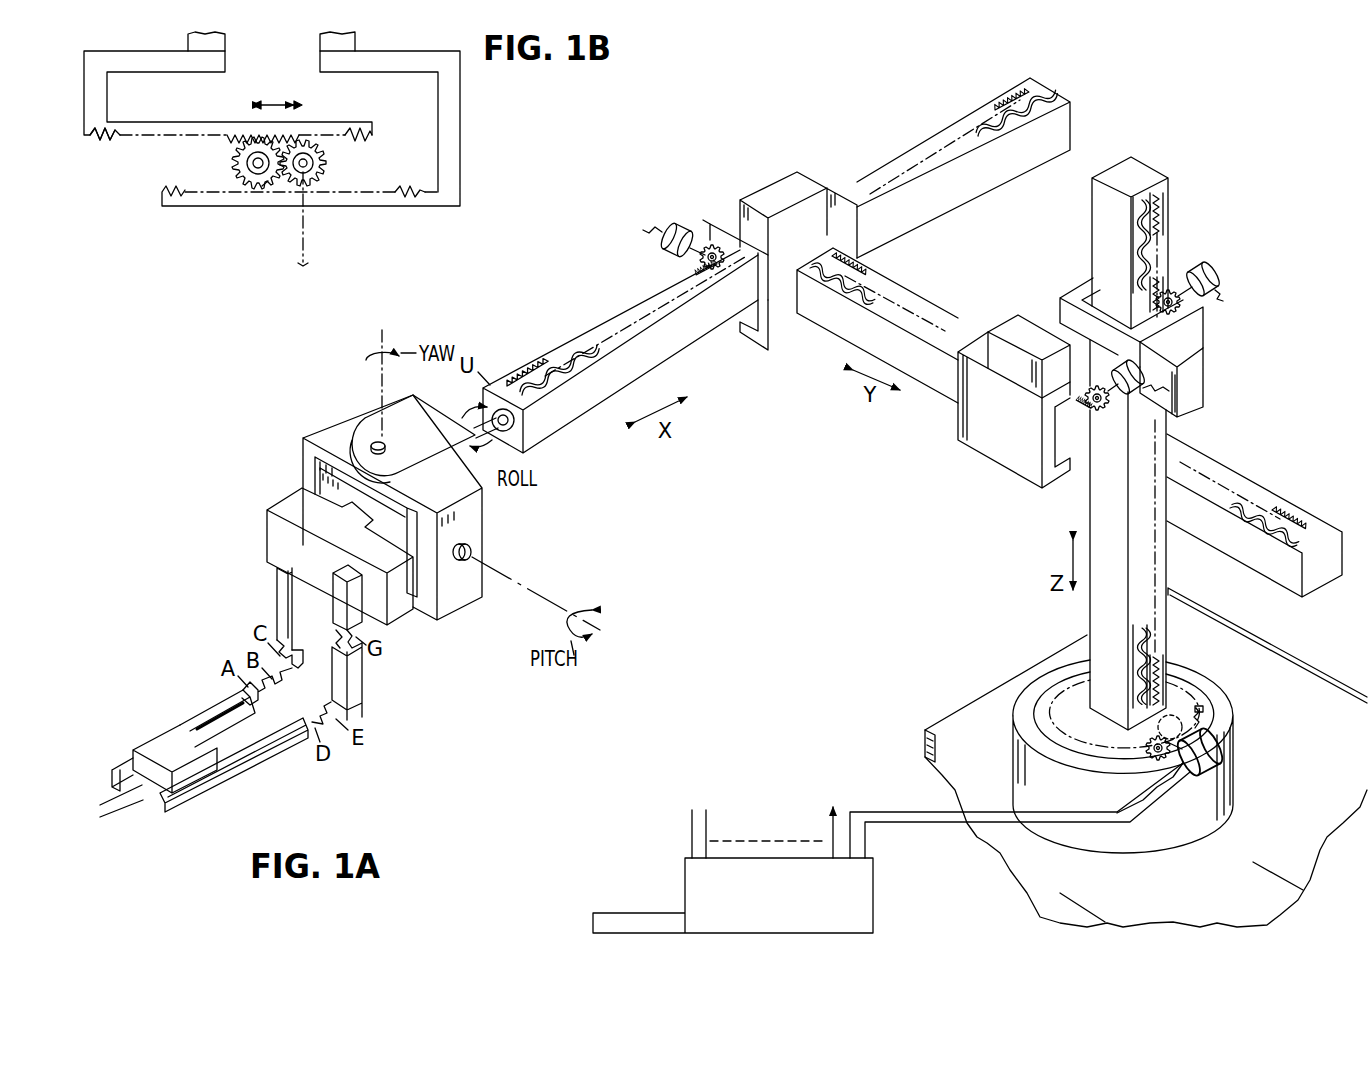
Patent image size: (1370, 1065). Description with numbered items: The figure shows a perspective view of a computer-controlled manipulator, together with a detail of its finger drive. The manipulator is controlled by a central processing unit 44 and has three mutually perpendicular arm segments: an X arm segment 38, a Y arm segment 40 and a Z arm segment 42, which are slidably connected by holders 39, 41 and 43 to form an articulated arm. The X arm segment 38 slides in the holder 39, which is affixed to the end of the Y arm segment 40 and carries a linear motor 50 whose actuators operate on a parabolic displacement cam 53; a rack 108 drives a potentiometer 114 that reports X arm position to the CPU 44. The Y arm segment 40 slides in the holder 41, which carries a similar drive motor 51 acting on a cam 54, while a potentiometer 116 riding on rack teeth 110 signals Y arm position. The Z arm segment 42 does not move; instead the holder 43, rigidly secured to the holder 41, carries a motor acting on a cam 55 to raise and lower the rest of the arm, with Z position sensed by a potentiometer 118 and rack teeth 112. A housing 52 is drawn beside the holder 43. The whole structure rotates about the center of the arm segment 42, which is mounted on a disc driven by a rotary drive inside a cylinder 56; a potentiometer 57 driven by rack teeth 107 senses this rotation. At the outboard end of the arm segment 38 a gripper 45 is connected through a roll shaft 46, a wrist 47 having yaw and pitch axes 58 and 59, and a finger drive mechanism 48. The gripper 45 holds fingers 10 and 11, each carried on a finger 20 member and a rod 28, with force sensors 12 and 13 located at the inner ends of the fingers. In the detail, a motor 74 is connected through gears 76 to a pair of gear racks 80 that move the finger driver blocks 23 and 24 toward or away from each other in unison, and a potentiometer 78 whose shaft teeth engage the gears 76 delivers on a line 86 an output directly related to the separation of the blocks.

In FIG. 1A, the finger 10 is at (212, 706).
In FIG. 1A, the finger 11 is at (268, 760).
In FIG. 1A, the sensor 12 is at (206, 641).
In FIG. 1A, the sensor 13 is at (270, 773).
In FIG. 1A, the second finger 20 is at (358, 681).
In FIG. 1B, the finger driver block 23 is at (328, 37).
In FIG. 1A, the finger driver block 23 is at (280, 602).
In FIG. 1B, the finger driver block 24 is at (218, 38).
In FIG. 1A, the finger driver block 24 is at (355, 607).
In FIG. 1A, the actuator rod 28 is at (122, 802).
In FIG. 1A, the X arm segment 38 is at (643, 306).
In FIG. 1A, the holder 39 is at (782, 341).
In FIG. 1A, the Y arm segment 40 is at (925, 300).
In FIG. 1A, the holder 41 is at (973, 427).
In FIG. 1A, the Z arm segment 42 is at (1167, 250).
In FIG. 1A, the holder 43 is at (1077, 292).
In FIG. 1A, the central processing unit (CPU) 44 is at (873, 882).
In FIG. 1A, the gripper 45 is at (357, 763).
In FIG. 1A, the roll shaft 46 is at (480, 420).
In FIG. 1A, the wrist 47 is at (343, 425).
In FIG. 1B, the finger drive mechanism 48 is at (493, 149).
In FIG. 1A, the finger drive mechanism 48 is at (293, 507).
In FIG. 1A, the linear motor 50 is at (800, 178).
In FIG. 1A, the drive motor 51 is at (998, 370).
In FIG. 1A, the Z drive housing 52 is at (1203, 357).
In FIG. 1A, the parabolic displacement cam 53 is at (592, 344).
In FIG. 1A, the cam 54 is at (838, 281).
In FIG. 1A, the cam 55 is at (1133, 253).
In FIG. 1A, the cylinder 56 is at (1043, 720).
In FIG. 1A, the potentiometer 57 is at (1222, 748).
In FIG. 1A, the yaw axis 58 is at (386, 444).
In FIG. 1A, the pitch axis 59 is at (472, 548).
In FIG. 1B, the motor 74 is at (232, 163).
In FIG. 1B, the gears 76 is at (246, 186).
In FIG. 1B, the potentiometer 78 is at (322, 165).
In FIG. 1B, the gear racks 80 is at (110, 137).
In FIG. 1B, the line 86 is at (304, 245).
In FIG. 1A, the rack teeth 107 is at (1205, 712).
In FIG. 1A, the rack 108 is at (530, 377).
In FIG. 1A, the rack teeth 110 is at (864, 277).
In FIG. 1A, the rack teeth 112 is at (1160, 212).
In FIG. 1A, the potentiometer 114 is at (685, 227).
In FIG. 1A, the potentiometer 116 is at (1157, 396).
In FIG. 1A, the potentiometer 118 is at (1218, 278).